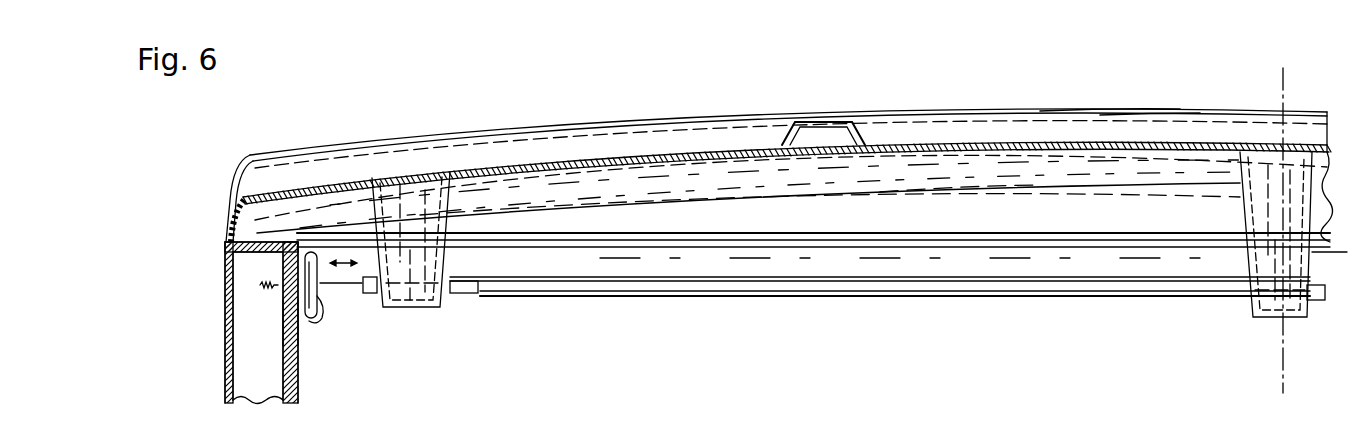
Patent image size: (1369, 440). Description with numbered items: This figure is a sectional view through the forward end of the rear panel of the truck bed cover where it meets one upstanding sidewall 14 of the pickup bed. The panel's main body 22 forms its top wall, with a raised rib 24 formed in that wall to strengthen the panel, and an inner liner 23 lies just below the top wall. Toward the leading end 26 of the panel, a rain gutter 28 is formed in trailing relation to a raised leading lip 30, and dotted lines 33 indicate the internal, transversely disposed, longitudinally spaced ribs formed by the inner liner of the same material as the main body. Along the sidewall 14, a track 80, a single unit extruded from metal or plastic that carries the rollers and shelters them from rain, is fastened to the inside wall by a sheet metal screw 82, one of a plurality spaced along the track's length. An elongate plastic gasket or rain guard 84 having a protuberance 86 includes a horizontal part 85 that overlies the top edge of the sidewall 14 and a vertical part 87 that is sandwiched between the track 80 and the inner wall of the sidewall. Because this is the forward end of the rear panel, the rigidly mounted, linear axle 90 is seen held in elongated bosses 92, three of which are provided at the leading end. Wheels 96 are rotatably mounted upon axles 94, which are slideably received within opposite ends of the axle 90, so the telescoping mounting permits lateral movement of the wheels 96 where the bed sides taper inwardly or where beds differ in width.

The sidewall 14 is at (226, 352).
The main body 22 is at (632, 150).
The inner liner 23 is at (700, 178).
The raised rib 24 is at (801, 120).
The leading end 26 is at (1077, 112).
The rain gutter 28 is at (994, 121).
The raised leading lip 30 is at (1150, 115).
The internal transverse rib 33 is at (950, 186).
The track 80 is at (313, 322).
The sheet metal screw 82 is at (258, 284).
The rain guard 84 is at (227, 243).
The horizontal part 85 is at (237, 205).
The protuberance 86 is at (289, 242).
The vertical part 87 is at (292, 330).
The axle 90 is at (907, 298).
The elongated boss 92 is at (428, 306).
The axle 94 is at (512, 298).
The wheel 96 is at (320, 300).